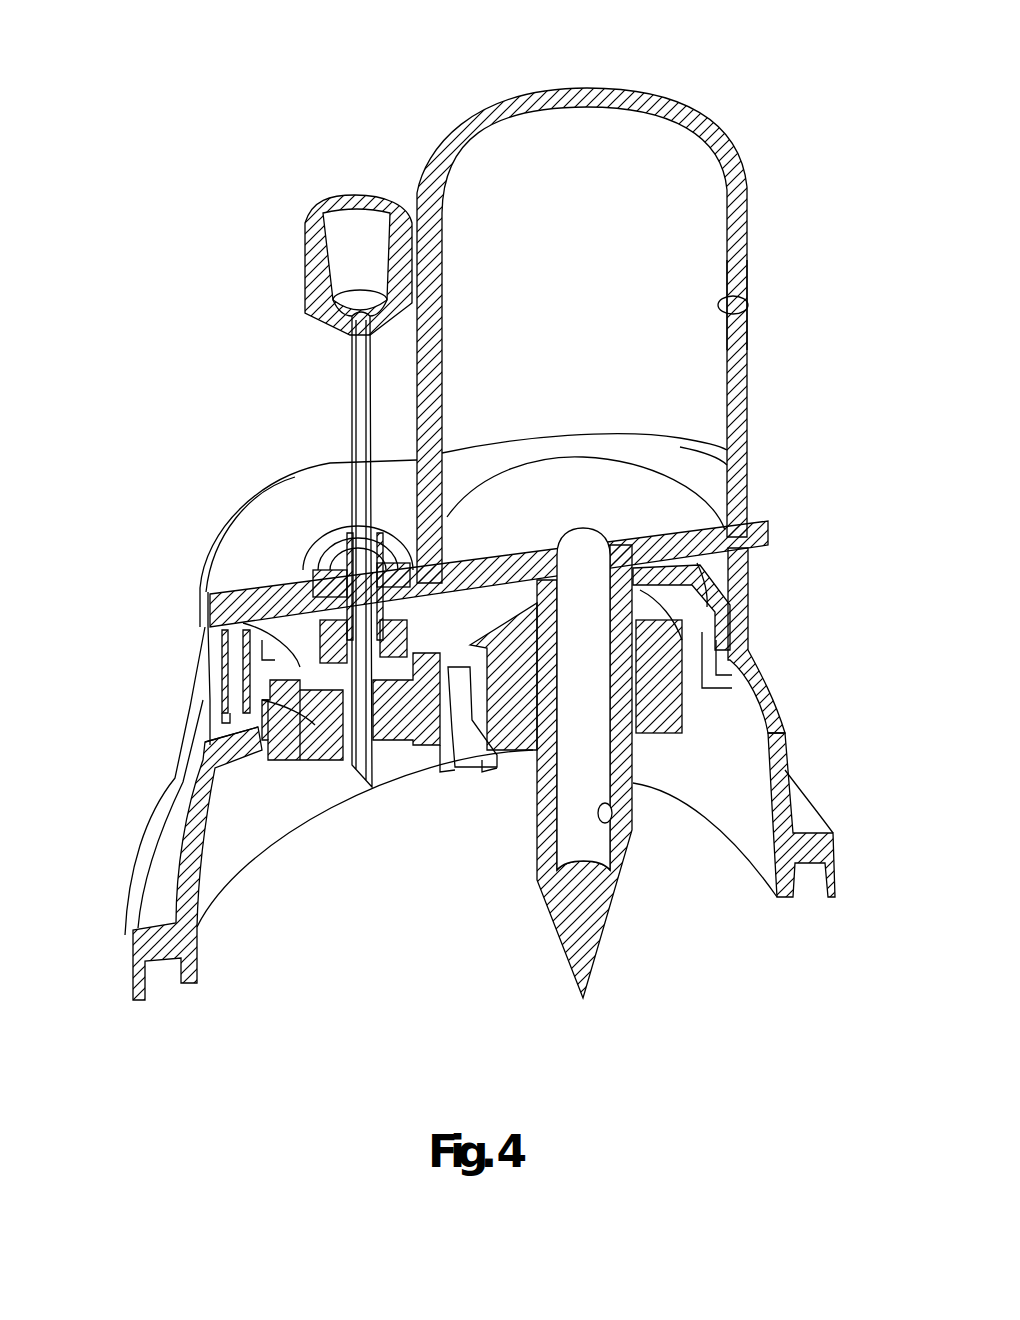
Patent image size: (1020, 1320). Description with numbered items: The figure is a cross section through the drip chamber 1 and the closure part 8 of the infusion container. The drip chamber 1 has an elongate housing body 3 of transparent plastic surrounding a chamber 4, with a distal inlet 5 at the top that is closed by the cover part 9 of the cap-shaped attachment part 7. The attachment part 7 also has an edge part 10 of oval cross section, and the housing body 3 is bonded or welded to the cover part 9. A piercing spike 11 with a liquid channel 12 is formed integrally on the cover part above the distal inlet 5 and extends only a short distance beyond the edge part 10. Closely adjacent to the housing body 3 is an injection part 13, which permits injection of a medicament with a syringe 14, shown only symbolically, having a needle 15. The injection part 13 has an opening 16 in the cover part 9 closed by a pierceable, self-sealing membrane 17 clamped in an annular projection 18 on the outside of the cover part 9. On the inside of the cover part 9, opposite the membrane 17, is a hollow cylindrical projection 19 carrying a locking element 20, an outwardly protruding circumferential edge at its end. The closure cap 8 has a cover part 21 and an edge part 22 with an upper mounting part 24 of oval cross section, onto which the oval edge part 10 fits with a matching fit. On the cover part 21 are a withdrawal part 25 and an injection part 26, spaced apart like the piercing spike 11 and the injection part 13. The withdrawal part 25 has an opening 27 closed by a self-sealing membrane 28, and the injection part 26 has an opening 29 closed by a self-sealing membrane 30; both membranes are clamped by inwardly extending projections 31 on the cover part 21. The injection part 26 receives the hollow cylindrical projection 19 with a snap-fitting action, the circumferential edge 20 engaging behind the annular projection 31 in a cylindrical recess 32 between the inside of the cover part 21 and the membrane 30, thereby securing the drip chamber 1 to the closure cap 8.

The drip chamber 1 is at (762, 265).
The housing body 3 is at (487, 117).
The chamber 4 is at (750, 305).
The distal inlet 5 is at (718, 472).
The attachment part 7 is at (775, 532).
The closure part 8 is at (800, 732).
The cover part 9 is at (265, 520).
The edge part 10 is at (740, 605).
The piercing spike 11 is at (639, 736).
The liquid channel 12 is at (606, 818).
The injection part 13 is at (315, 535).
The syringe 14 is at (338, 192).
The needle 15 is at (358, 368).
The opening 16 is at (276, 600).
The membrane 17 is at (388, 520).
The annular projection 18 is at (343, 540).
The hollow cylindrical projection 19 is at (458, 720).
The locking element 20 is at (383, 755).
The cover part 21 is at (272, 690).
The edge part 22 is at (190, 866).
The upper mounting part 24 is at (716, 638).
The withdrawal part 25 is at (700, 578).
The injection part 26 is at (296, 645).
The opening 27 is at (623, 547).
The membrane 28 is at (662, 702).
The opening 29 is at (262, 737).
The membrane 30 is at (283, 757).
The projections 31 is at (268, 650).
The cylindrical recess 32 is at (308, 748).